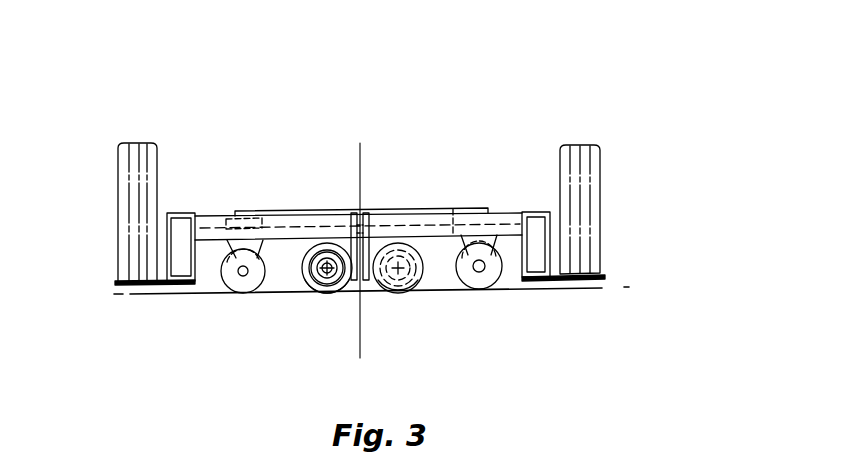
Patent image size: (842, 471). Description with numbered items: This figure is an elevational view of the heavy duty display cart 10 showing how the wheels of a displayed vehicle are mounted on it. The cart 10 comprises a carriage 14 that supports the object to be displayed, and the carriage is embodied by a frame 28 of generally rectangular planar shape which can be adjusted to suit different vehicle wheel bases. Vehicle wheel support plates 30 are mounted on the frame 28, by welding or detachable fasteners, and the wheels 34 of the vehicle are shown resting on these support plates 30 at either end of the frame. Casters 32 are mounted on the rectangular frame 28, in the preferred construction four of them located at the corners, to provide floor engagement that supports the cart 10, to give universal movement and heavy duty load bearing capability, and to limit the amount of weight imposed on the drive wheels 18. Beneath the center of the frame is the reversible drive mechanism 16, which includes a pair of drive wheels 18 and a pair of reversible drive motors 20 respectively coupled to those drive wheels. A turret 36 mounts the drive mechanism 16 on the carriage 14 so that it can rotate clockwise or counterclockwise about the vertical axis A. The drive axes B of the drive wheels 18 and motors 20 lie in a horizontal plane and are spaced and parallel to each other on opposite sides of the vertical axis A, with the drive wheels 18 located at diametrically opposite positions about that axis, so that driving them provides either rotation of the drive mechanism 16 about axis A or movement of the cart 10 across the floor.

The heavy duty display cart 10 is at (446, 168).
The carriage 14 is at (293, 212).
The reversible drive mechanism 16 is at (310, 258).
The drive wheels 18 is at (340, 289).
The reversible drive motors 20 is at (345, 234).
The frame 28 is at (205, 220).
The vehicle wheel support plates 30 is at (115, 282).
The casters 32 is at (235, 288).
The wheels 34 is at (117, 163).
The turret 36 is at (369, 281).
The vertical axis A is at (362, 148).
The axes of rotation B is at (320, 286).